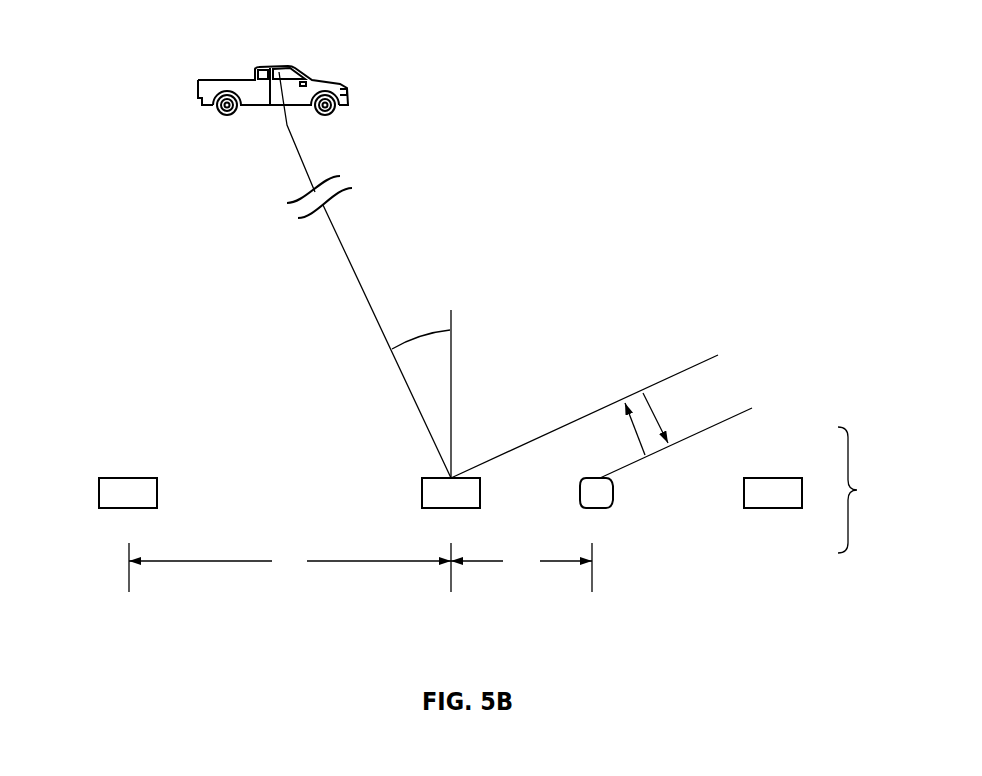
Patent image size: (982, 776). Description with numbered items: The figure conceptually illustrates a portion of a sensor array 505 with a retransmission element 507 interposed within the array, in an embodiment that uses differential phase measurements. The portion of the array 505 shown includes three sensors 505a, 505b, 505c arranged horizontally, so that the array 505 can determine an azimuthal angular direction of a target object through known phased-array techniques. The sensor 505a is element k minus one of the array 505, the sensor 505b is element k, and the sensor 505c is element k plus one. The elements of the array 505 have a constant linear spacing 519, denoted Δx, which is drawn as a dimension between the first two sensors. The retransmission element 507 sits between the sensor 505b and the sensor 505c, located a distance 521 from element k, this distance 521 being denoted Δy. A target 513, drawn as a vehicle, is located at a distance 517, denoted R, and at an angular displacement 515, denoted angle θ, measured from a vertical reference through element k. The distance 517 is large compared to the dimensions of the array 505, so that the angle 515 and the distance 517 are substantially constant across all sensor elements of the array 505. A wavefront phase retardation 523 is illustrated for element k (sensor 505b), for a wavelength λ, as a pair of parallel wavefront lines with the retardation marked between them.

The target 513 is at (317, 77).
The distance R 517 is at (350, 265).
The angular displacement 515 is at (417, 293).
The wavefront phase retardation 523 is at (700, 397).
The array 505 is at (870, 490).
The sensor 505a is at (97, 493).
The sensor 505b is at (422, 495).
The sensor 505c is at (775, 508).
The retransmission element 507 is at (613, 492).
The linear spacing 519 is at (285, 585).
The distance 521 is at (523, 590).